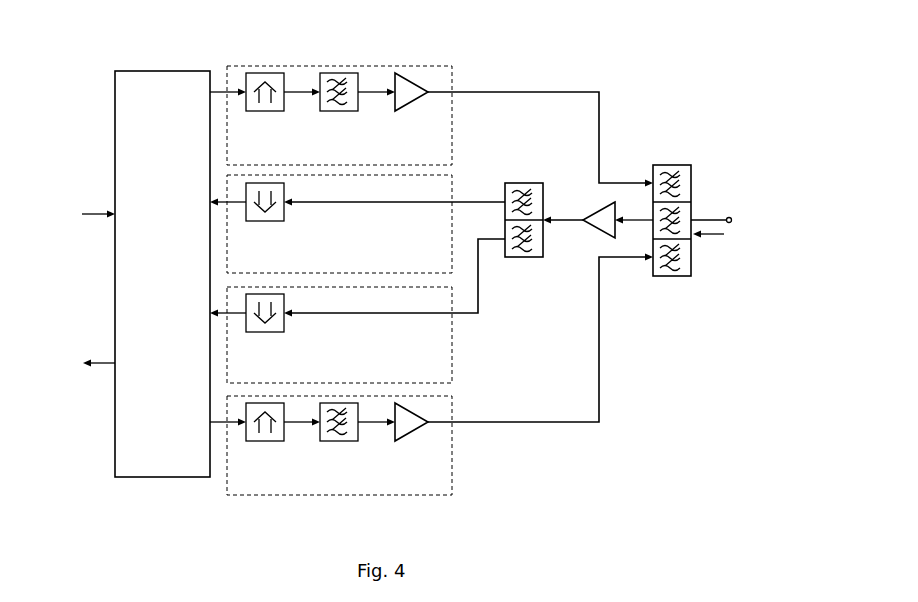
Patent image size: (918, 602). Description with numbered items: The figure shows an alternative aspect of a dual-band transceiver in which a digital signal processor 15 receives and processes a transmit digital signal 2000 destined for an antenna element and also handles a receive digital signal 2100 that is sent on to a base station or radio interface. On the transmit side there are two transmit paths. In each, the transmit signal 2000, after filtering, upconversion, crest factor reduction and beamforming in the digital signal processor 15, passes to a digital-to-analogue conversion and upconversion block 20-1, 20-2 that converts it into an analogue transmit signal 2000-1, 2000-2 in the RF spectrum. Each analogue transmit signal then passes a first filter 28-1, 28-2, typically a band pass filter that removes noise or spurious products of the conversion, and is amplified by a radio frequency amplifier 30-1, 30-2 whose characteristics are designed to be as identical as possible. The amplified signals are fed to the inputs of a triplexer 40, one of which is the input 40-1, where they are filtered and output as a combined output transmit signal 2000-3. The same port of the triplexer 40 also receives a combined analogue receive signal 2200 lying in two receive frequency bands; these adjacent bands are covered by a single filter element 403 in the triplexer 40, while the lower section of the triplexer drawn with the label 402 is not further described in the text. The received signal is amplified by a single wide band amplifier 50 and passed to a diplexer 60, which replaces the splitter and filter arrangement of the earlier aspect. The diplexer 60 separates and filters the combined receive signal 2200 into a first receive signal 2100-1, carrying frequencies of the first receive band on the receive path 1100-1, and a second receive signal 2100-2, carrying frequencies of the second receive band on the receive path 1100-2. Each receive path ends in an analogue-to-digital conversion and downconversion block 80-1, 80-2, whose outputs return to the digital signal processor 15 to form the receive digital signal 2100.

The digital signal processor 15 is at (125, 106).
The transmit digital signal 2000 is at (76, 213).
The receive digital signal 2100 is at (76, 362).
The digital-to-analogue conversion and upconversion block 20-1 is at (253, 72).
The first filter 28-1 is at (343, 73).
The radio frequency amplifier 30-1 is at (415, 83).
The analogue transmit signal 2000-1 is at (535, 92).
The first receive signal 2100-1 is at (472, 200).
The analogue-to-digital conversion and downconversion block 80-1 is at (273, 222).
The receive path 1100-1 is at (360, 204).
The second receive signal 2100-2 is at (468, 315).
The analogue-to-digital conversion and downconversion block 80-2 is at (273, 333).
The receive path 1100-2 is at (342, 315).
The digital-to-analogue conversion and upconversion block 20-2 is at (273, 443).
The first filter 28-2 is at (342, 443).
The radio frequency amplifier 30-2 is at (423, 425).
The analogue transmit signal 2000-2 is at (522, 424).
The diplexer 60 is at (536, 271).
The single wide band amplifier 50 is at (607, 207).
The combined analogue receive signal 2200 is at (558, 218).
The triplexer 40 is at (720, 237).
The input of the triplexer 40-1 is at (692, 178).
The single filter element 403 is at (692, 216).
The second triplexer filter 402 is at (687, 262).
The combined output transmit signal 2000-3 is at (747, 212).